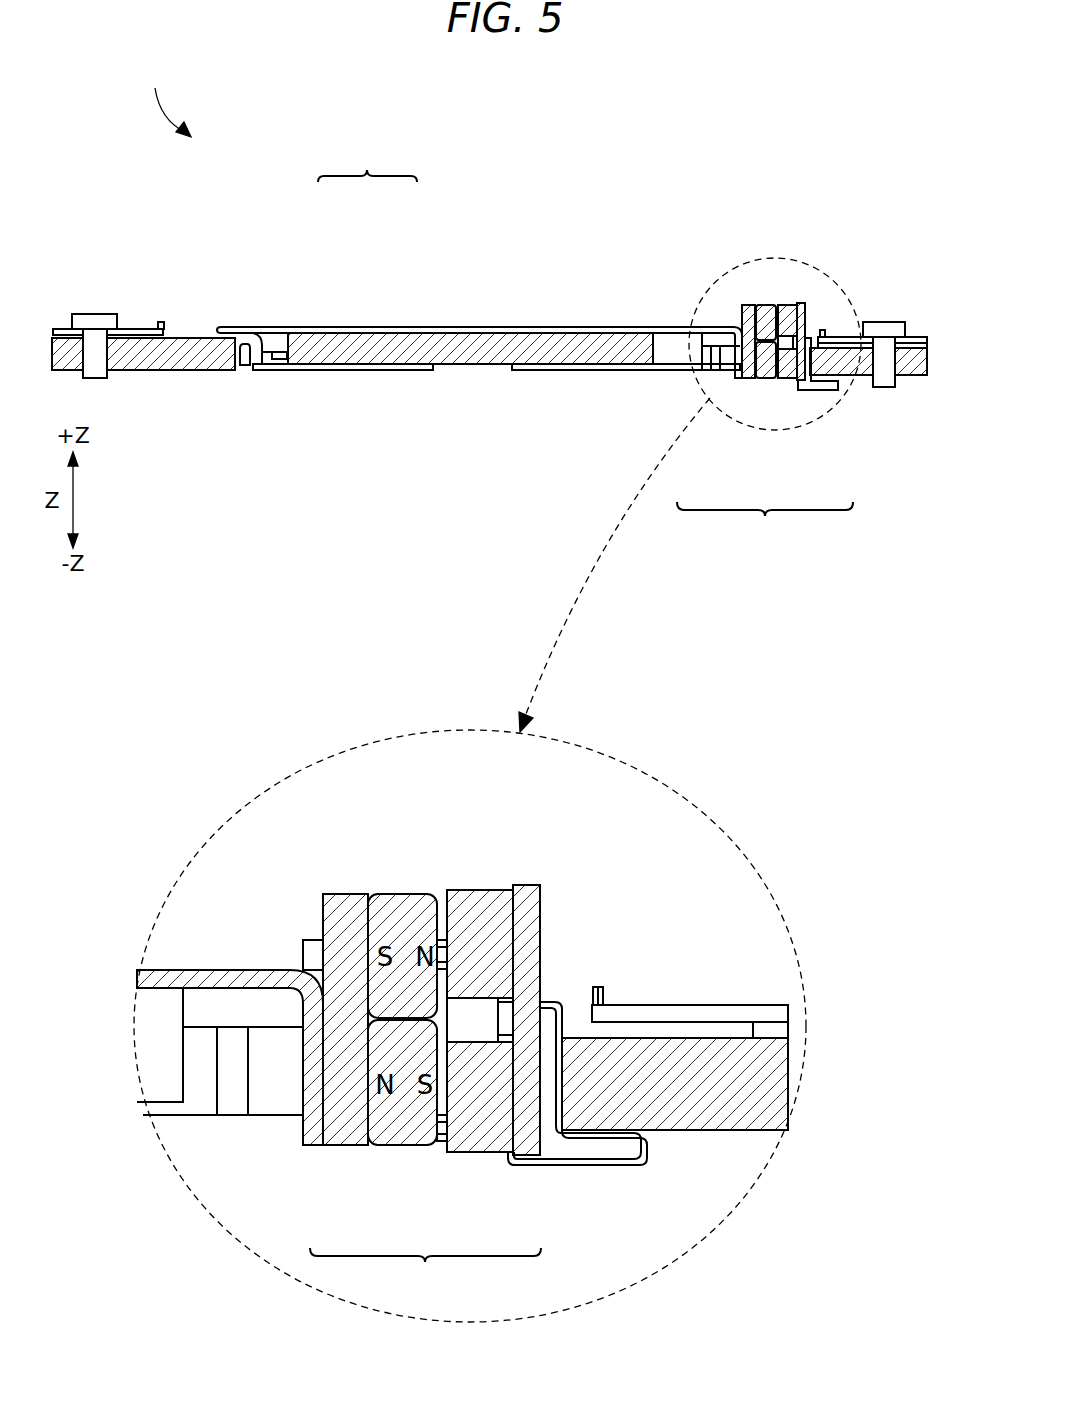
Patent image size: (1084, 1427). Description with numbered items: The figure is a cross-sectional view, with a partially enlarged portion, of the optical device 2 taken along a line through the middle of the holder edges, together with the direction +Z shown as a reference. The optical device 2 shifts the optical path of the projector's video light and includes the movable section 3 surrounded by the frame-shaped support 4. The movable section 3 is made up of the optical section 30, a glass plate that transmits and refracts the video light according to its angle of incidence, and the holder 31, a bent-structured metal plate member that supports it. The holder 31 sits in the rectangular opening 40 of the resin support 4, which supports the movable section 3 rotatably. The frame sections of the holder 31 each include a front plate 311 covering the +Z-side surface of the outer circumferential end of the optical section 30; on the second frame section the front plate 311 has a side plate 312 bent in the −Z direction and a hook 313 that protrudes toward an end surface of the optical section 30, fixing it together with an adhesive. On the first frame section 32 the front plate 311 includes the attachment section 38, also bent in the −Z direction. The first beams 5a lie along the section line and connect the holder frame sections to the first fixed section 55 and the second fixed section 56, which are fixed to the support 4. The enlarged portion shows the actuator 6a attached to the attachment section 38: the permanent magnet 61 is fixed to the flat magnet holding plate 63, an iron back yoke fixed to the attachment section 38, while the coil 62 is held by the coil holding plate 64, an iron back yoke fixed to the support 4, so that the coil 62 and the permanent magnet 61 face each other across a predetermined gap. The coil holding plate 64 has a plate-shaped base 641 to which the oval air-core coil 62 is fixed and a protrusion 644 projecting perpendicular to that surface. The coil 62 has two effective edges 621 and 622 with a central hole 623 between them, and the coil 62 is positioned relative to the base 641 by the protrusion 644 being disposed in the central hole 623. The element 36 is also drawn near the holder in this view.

The optical device 2 is at (166, 100).
The movable section 3 is at (367, 162).
The optical section 30 is at (350, 331).
The holder 31 is at (285, 331).
The front plate 311 is at (277, 335).
The first frame section 32 is at (667, 329).
The side plate 312 is at (243, 340).
The hook 313 is at (263, 368).
The support 4 is at (178, 338).
The first beams 5a is at (138, 329).
The first fixed section 55 is at (908, 333).
The second fixed section 56 is at (74, 315).
The support portion 36 is at (635, 331).
The attachment section 38 is at (733, 358).
The opening 40 is at (238, 368).
The actuator 6a is at (581, 896).
The permanent magnet 61 is at (763, 382).
The coil 62 is at (612, 775).
The effective edge 621 is at (480, 891).
The effective edge 622 is at (492, 1125).
The central hole 623 is at (465, 1008).
The magnet holding plate 63 is at (748, 382).
The coil holding plate 64 is at (672, 774).
The base 641 is at (527, 884).
The protrusion 644 is at (499, 1012).